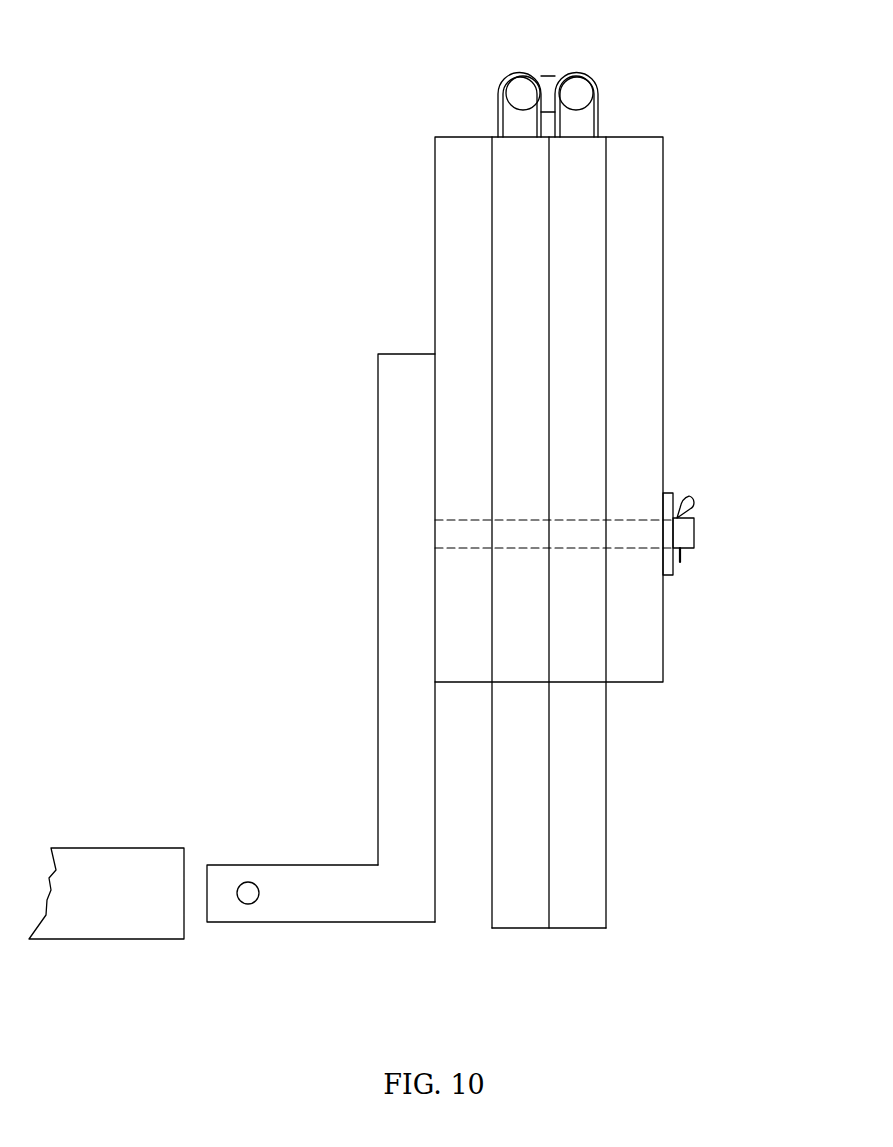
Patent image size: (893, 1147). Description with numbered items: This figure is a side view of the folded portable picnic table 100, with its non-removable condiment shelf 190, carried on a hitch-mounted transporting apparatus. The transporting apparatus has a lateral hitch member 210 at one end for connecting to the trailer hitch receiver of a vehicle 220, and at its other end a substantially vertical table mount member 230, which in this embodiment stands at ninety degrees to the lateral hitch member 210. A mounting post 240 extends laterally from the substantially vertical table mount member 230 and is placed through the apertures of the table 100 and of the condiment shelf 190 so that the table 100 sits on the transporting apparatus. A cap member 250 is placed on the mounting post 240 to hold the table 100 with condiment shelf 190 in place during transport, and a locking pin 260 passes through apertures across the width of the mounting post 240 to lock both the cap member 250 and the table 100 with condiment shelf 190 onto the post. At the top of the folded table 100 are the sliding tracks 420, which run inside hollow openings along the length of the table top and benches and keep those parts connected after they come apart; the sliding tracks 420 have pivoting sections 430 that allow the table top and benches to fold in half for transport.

The table 100 is at (697, 107).
The condiment shelf 190 is at (635, 187).
The lateral hitch member 210 is at (298, 907).
The vehicle 220 is at (123, 913).
The substantially vertical table mount member 230 is at (393, 536).
The mounting post 240 is at (687, 533).
The cap member 250 is at (668, 497).
The locking pin 260 is at (691, 500).
The sliding tracks 420 is at (548, 97).
The pivoting sections 430 is at (523, 93).